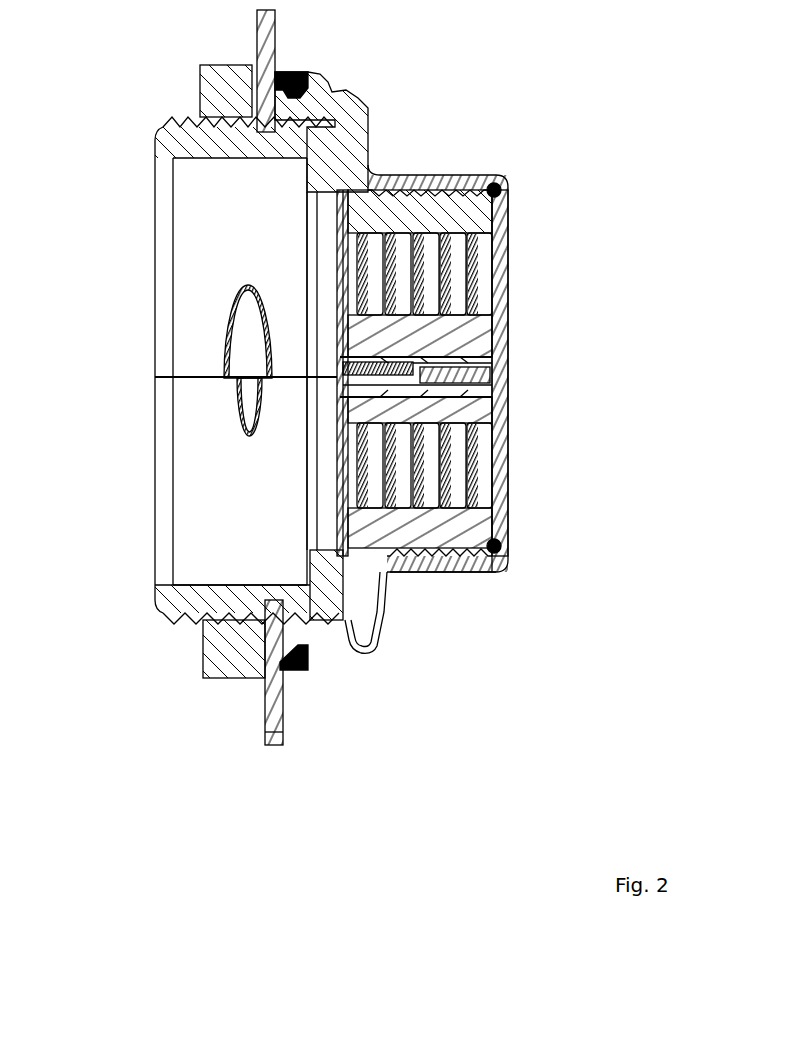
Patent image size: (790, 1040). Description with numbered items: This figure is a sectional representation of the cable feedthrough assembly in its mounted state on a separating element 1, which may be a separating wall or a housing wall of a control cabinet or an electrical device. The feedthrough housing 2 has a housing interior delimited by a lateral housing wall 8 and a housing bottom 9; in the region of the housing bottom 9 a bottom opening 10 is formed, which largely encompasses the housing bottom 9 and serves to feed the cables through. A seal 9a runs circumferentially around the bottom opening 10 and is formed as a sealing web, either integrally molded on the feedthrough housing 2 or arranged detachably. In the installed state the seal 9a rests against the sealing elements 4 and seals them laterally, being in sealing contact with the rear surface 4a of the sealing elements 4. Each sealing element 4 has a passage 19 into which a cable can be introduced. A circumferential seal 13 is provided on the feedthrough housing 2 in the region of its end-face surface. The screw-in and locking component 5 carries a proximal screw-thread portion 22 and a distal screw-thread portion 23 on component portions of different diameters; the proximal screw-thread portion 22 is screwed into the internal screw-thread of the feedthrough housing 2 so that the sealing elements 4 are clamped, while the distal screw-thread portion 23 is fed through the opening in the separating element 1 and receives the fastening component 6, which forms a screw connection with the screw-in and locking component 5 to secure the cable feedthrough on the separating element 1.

The separating element 1 is at (272, 52).
The circumferential seal 13 is at (305, 80).
The feedthrough housing 2 is at (352, 118).
The passage 19 is at (486, 290).
The sealing elements 4 is at (486, 333).
The bottom opening 10 is at (505, 425).
The housing bottom 9 is at (505, 492).
The seal 9a is at (502, 549).
The rear surface 4a is at (496, 572).
The lateral housing wall 8 is at (432, 575).
The proximal screw-thread portion 22 is at (318, 676).
The fastening component 6 is at (248, 665).
The distal screw-thread portion 23 is at (196, 612).
The screw-in and locking component 5 is at (158, 604).